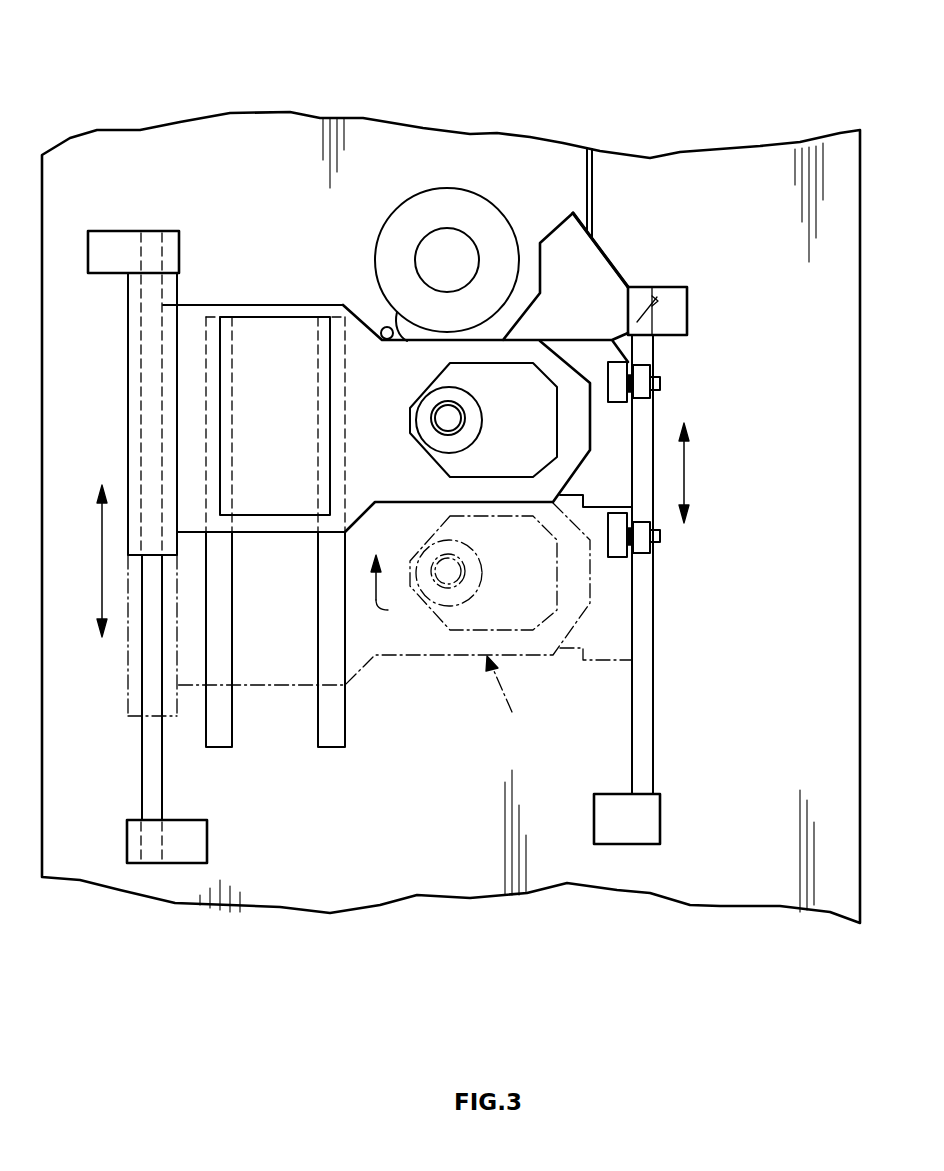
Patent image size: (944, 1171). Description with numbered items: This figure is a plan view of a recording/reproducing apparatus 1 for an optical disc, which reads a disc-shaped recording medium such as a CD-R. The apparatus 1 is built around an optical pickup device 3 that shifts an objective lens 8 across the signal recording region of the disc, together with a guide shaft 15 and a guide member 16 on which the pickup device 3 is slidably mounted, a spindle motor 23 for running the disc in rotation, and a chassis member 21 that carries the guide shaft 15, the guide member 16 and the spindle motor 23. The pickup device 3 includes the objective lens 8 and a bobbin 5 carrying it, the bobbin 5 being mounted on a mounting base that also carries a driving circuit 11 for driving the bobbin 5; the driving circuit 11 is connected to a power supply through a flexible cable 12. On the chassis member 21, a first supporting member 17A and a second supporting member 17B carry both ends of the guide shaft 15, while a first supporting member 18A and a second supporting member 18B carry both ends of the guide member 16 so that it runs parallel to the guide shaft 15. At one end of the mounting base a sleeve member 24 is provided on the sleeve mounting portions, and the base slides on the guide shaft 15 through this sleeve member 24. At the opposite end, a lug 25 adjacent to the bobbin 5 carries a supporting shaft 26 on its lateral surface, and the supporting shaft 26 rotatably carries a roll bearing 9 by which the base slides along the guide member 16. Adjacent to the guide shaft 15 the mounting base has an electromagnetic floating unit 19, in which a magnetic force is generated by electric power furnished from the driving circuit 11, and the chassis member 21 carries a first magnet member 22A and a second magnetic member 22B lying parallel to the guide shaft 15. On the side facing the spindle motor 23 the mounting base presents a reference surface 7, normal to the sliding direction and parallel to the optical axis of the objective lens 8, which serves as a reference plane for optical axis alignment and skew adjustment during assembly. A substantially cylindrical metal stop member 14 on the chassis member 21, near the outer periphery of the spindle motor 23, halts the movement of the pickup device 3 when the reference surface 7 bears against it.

The recording/reproducing apparatus 1 is at (671, 108).
The optical pickup device 3 is at (389, 637).
The bobbin 5 is at (495, 458).
The reference surface 7 is at (385, 325).
The objective lens 8 is at (450, 425).
The roll bearing 9 is at (655, 373).
The driving circuit 11 is at (600, 258).
The flexible cable 12 is at (592, 200).
The stop member 14 is at (378, 325).
The guide shaft 15 is at (158, 778).
The guide member 16 is at (642, 724).
The first supporting member 17A is at (195, 833).
The second supporting member 17B is at (111, 233).
The first supporting member 18A is at (645, 818).
The second supporting member 18B is at (688, 310).
The electromagnetic floating unit 19 is at (258, 330).
The chassis member 21 is at (735, 158).
The first magnet member 22A is at (228, 735).
The second magnetic member 22B is at (345, 722).
The spindle motor 23 is at (473, 206).
The sleeve member 24 is at (140, 405).
The lug 25 is at (617, 390).
The supporting shaft 26 is at (662, 386).